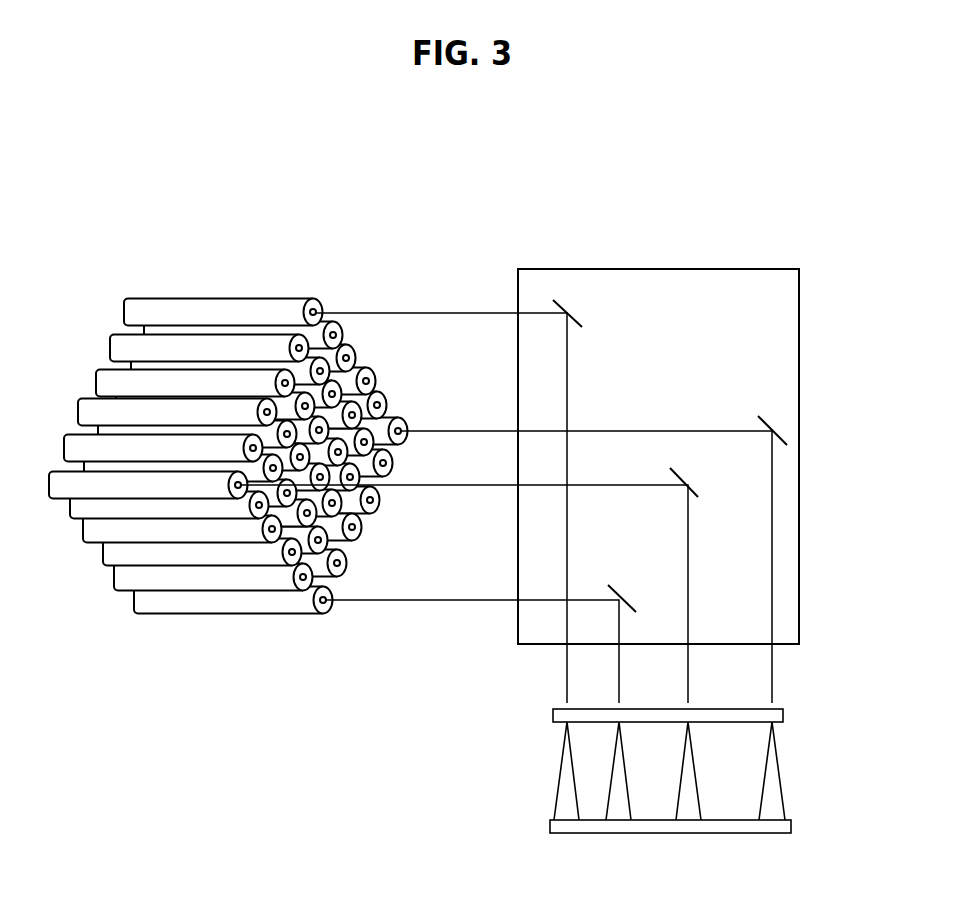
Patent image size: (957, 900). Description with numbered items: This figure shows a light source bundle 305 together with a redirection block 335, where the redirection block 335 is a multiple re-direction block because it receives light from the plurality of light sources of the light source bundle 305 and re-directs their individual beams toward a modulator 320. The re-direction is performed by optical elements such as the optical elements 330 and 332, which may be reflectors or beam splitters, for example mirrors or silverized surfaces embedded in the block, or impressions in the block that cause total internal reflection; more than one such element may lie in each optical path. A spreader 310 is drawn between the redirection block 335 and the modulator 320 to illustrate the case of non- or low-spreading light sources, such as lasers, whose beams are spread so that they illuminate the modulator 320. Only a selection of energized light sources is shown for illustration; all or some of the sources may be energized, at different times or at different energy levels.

The light source bundle 305 is at (296, 249).
The spreader 310 is at (526, 713).
The modulator 320 is at (526, 826).
The optical element 330 is at (600, 301).
The optical element 332 is at (788, 420).
The redirection block 335 is at (726, 318).